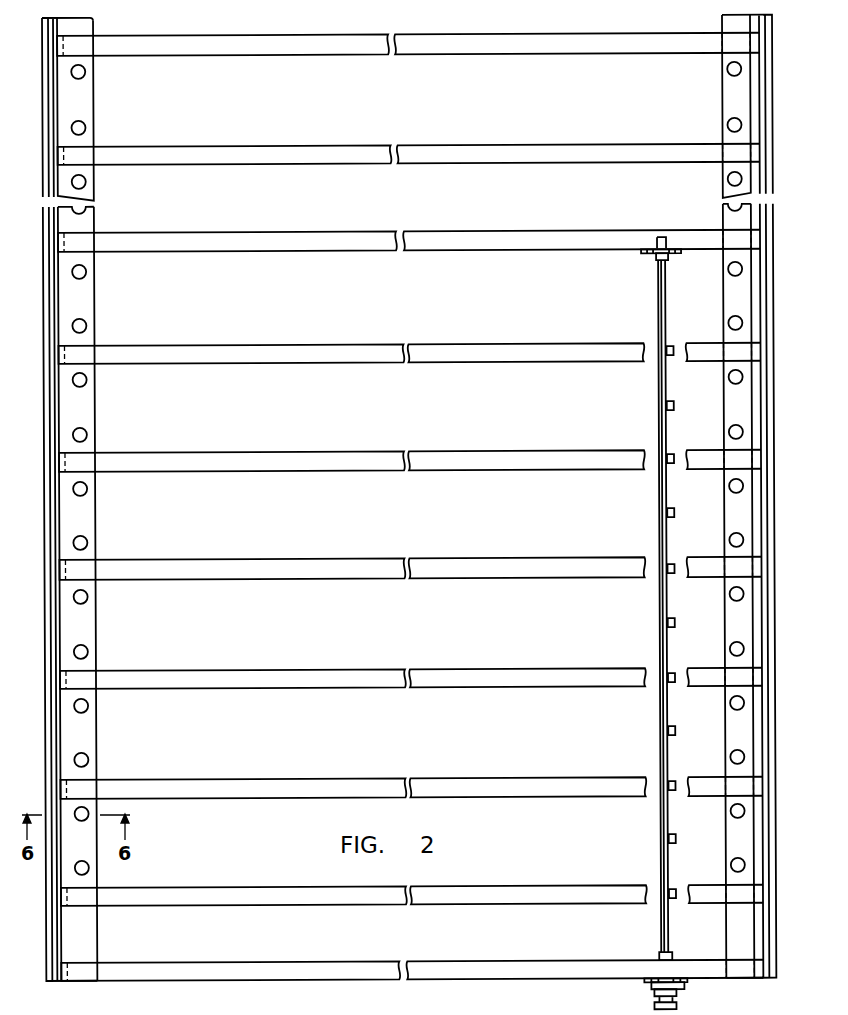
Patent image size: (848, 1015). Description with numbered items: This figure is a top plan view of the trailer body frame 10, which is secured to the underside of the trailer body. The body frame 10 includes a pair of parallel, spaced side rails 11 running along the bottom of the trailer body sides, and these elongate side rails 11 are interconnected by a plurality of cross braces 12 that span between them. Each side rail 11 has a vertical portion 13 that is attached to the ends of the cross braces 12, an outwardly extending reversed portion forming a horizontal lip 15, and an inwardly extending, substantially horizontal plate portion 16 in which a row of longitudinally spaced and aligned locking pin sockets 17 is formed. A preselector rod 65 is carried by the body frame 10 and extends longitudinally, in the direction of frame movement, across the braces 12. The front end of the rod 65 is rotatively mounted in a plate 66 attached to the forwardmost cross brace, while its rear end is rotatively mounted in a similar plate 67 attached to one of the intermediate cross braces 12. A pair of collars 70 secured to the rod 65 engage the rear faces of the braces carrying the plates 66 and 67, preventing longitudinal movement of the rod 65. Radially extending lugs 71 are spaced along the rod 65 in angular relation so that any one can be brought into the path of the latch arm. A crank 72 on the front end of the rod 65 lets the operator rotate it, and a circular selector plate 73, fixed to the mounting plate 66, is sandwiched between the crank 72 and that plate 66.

The body frame 10 is at (298, 453).
The side rail 11 is at (93, 99).
The cross brace 12 is at (293, 144).
The vertical portion 13 is at (44, 99).
The horizontal lip 15 is at (50, 940).
The horizontal plate portion 16 is at (83, 941).
The locking pin socket 17 is at (86, 182).
The preselector rod 65 is at (657, 605).
The plate 66 is at (642, 982).
The plate 67 is at (641, 253).
The collar 70 is at (668, 256).
The lug 71 is at (673, 404).
The crank 72 is at (655, 997).
The selector plate 73 is at (680, 987).